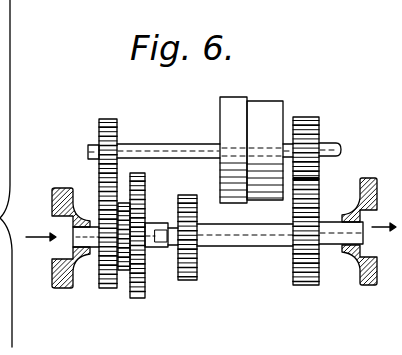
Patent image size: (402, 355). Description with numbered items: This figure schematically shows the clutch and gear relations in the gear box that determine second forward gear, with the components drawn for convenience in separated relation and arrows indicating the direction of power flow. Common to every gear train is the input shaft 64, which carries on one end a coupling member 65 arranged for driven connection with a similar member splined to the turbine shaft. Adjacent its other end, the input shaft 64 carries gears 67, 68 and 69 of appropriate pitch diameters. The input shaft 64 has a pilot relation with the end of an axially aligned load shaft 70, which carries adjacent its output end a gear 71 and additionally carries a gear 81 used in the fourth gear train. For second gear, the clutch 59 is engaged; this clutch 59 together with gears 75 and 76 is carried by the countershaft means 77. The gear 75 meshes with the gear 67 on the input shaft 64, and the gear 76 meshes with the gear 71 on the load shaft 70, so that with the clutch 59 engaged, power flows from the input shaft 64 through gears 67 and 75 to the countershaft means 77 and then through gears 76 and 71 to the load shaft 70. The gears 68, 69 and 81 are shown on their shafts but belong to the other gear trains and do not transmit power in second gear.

The clutch 59 is at (258, 97).
The input shaft 64 is at (97, 252).
The coupling member 65 is at (60, 188).
The gear 67 is at (108, 289).
The gear 68 is at (125, 271).
The gear 69 is at (138, 298).
The load shaft 70 is at (238, 247).
The gear 71 is at (307, 285).
The gear 75 is at (106, 118).
The gear 76 is at (308, 117).
The countershaft means 77 is at (160, 143).
The gear 81 is at (186, 281).